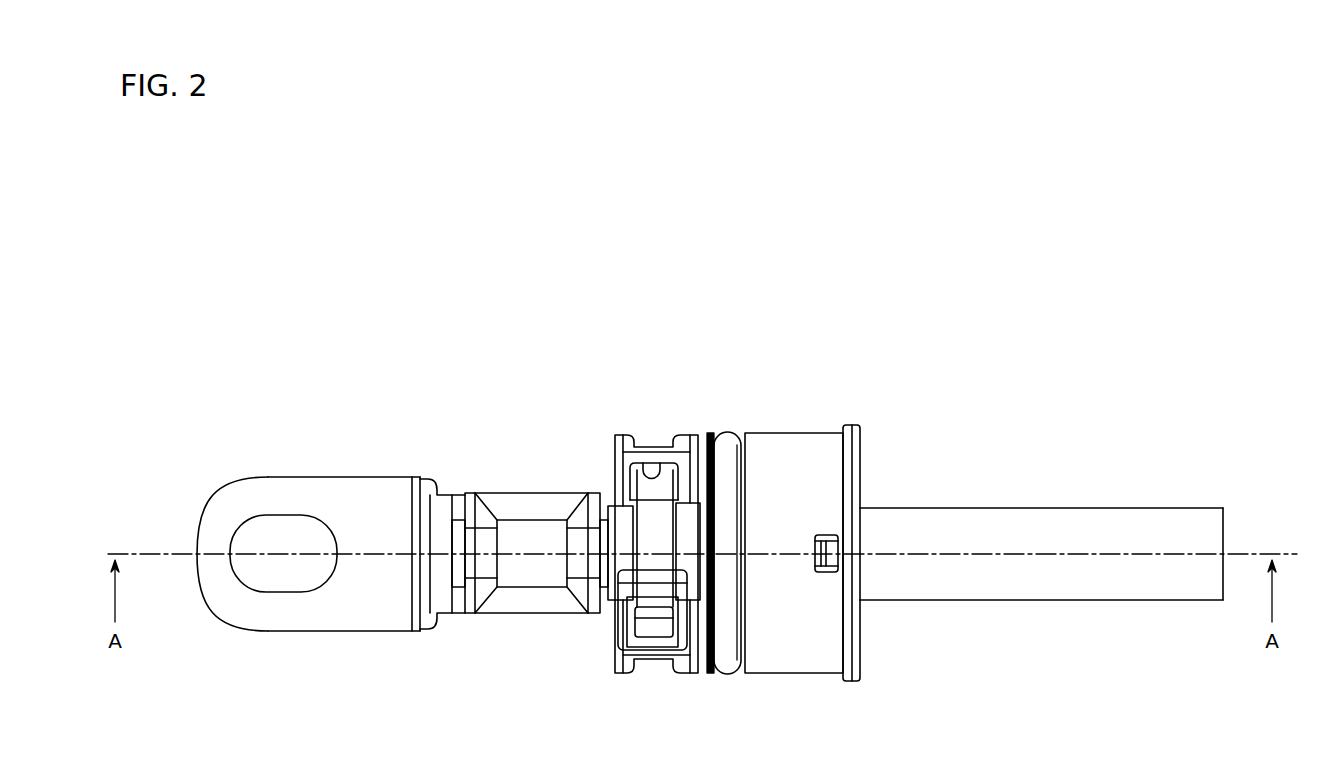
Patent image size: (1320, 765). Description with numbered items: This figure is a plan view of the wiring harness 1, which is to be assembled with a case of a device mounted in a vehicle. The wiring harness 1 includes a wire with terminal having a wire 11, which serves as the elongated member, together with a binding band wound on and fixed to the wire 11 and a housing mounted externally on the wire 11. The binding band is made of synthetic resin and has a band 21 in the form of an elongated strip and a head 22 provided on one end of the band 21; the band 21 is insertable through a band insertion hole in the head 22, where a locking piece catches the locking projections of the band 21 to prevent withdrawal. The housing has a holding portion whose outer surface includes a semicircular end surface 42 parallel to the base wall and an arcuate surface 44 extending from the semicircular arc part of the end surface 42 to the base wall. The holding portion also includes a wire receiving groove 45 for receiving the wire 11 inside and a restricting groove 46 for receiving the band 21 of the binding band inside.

The wiring harness 1 is at (1088, 403).
The wire 11 is at (1123, 600).
The band 21 is at (652, 537).
The head 22 is at (628, 642).
The end surface 42 is at (607, 452).
The arcuate surface 44 is at (692, 432).
The wire receiving groove 45 is at (685, 513).
The restricting groove 46 is at (655, 480).